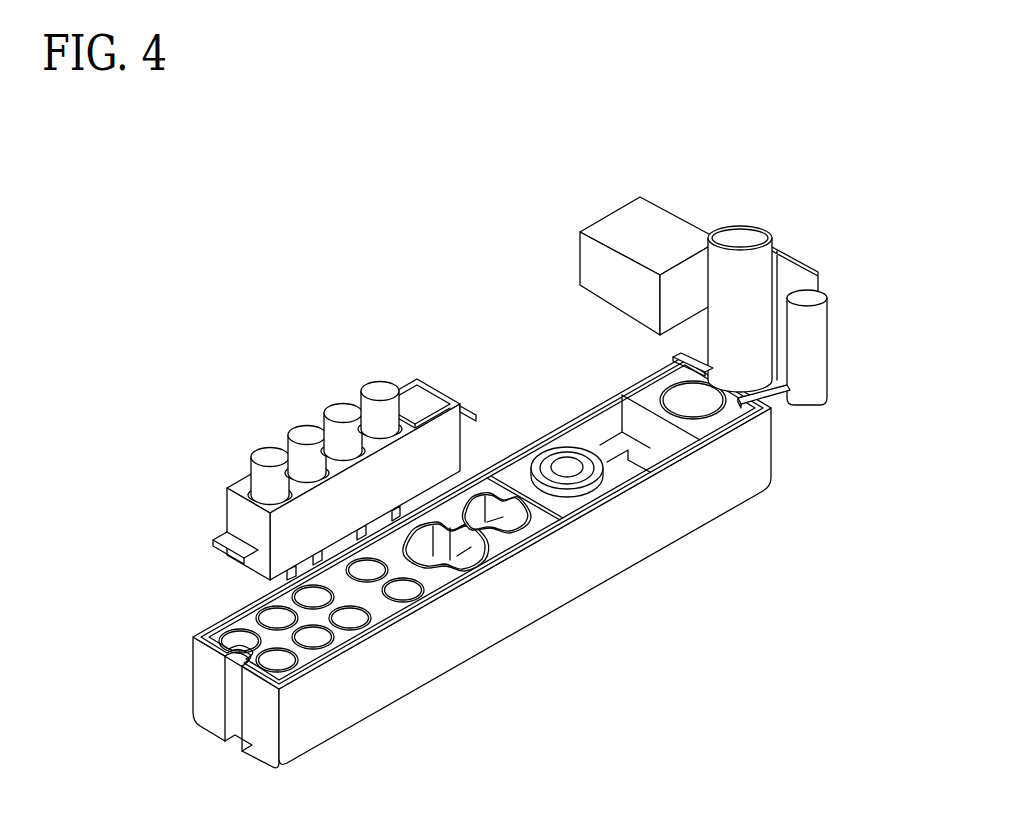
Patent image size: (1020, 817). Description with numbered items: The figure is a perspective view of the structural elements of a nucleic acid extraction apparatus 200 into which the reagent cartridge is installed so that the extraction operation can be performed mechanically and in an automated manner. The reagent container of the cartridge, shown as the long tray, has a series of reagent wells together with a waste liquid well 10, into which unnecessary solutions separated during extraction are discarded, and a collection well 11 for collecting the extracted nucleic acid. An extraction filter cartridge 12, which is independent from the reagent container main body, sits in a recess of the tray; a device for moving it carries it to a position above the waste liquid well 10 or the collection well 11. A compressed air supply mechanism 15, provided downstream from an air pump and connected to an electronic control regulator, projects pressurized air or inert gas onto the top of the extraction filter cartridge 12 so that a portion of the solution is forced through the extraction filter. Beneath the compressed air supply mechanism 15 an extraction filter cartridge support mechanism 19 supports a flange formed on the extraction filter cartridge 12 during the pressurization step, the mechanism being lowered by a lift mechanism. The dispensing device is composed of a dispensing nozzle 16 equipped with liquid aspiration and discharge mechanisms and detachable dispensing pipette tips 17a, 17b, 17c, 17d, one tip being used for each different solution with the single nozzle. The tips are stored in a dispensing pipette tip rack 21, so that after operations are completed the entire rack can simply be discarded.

The nucleic acid extraction apparatus 200 is at (485, 283).
The waste liquid well 10 is at (462, 553).
The collection well 11 is at (505, 518).
The extraction filter cartridge 12 is at (567, 466).
The compressed air supply mechanism 15 is at (732, 300).
The dispensing nozzle 16 is at (812, 345).
The dispensing pipette tip 17a is at (271, 456).
The dispensing pipette tip 17b is at (307, 434).
The dispensing pipette tip 17c is at (343, 412).
The dispensing pipette tip 17d is at (380, 390).
The extraction filter cartridge support mechanism 19 is at (769, 390).
The dispensing pipette tip rack 21 is at (245, 516).